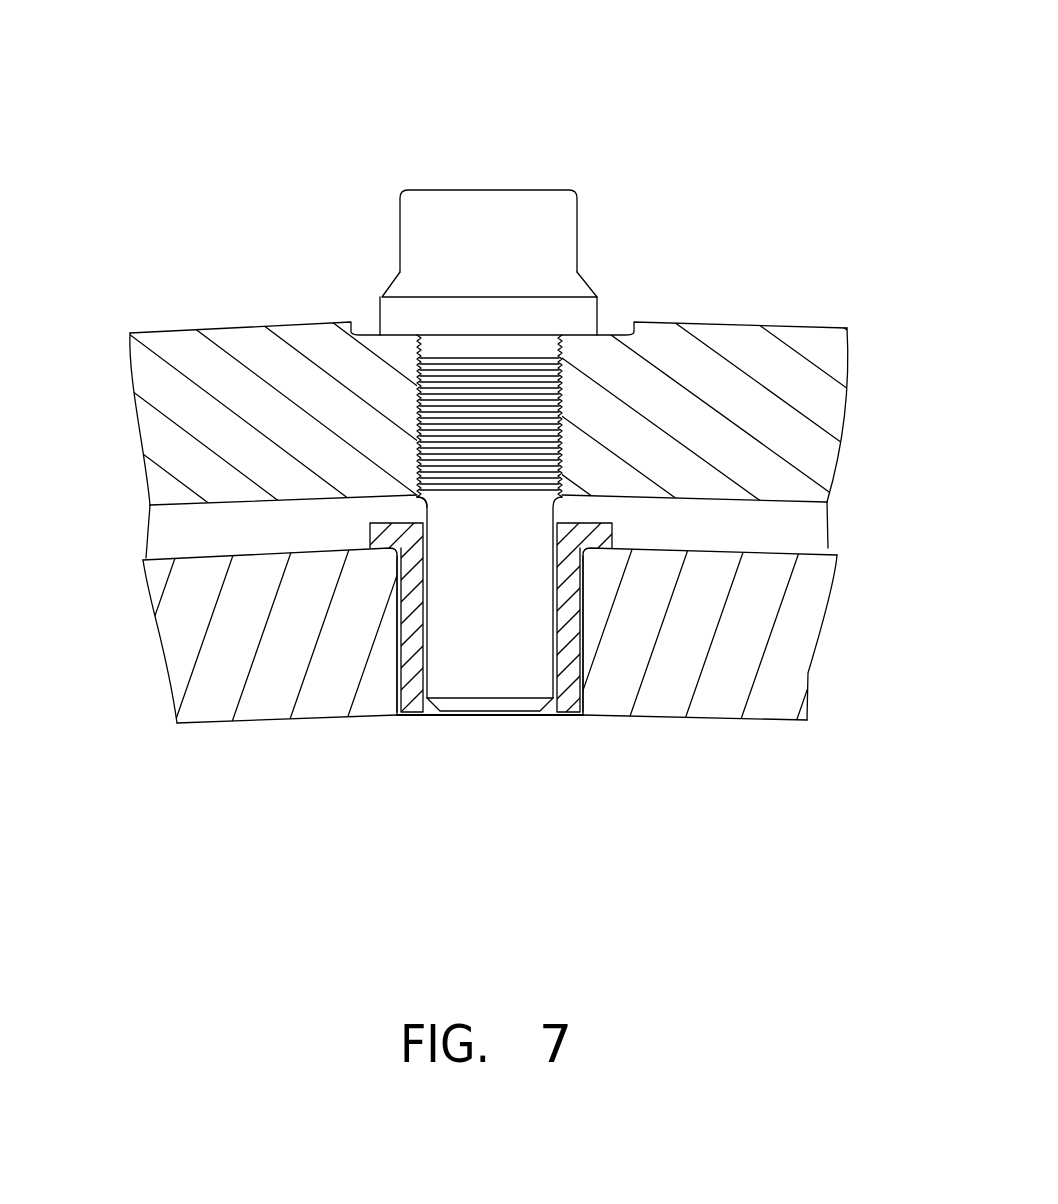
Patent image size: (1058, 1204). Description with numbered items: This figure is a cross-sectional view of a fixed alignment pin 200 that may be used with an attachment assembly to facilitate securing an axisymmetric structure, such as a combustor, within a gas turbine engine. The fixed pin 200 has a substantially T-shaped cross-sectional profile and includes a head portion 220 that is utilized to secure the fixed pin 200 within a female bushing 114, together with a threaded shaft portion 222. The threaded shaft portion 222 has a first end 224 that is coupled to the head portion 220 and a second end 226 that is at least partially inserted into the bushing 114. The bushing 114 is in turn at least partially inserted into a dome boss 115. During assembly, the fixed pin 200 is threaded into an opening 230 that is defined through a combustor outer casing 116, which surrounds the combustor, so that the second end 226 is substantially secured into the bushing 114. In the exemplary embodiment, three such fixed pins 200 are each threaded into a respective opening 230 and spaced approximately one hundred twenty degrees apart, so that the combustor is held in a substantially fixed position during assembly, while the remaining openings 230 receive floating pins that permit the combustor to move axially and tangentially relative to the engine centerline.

The fixed alignment pin 200 is at (642, 62).
The head portion 220 is at (415, 240).
The first end 224 is at (500, 333).
The threaded shaft portion 222 is at (540, 523).
The second end 226 is at (448, 692).
The opening 230 is at (415, 497).
The female bushing 114 is at (573, 713).
The dome boss 115 is at (718, 703).
The combustor outer casing 116 is at (160, 390).